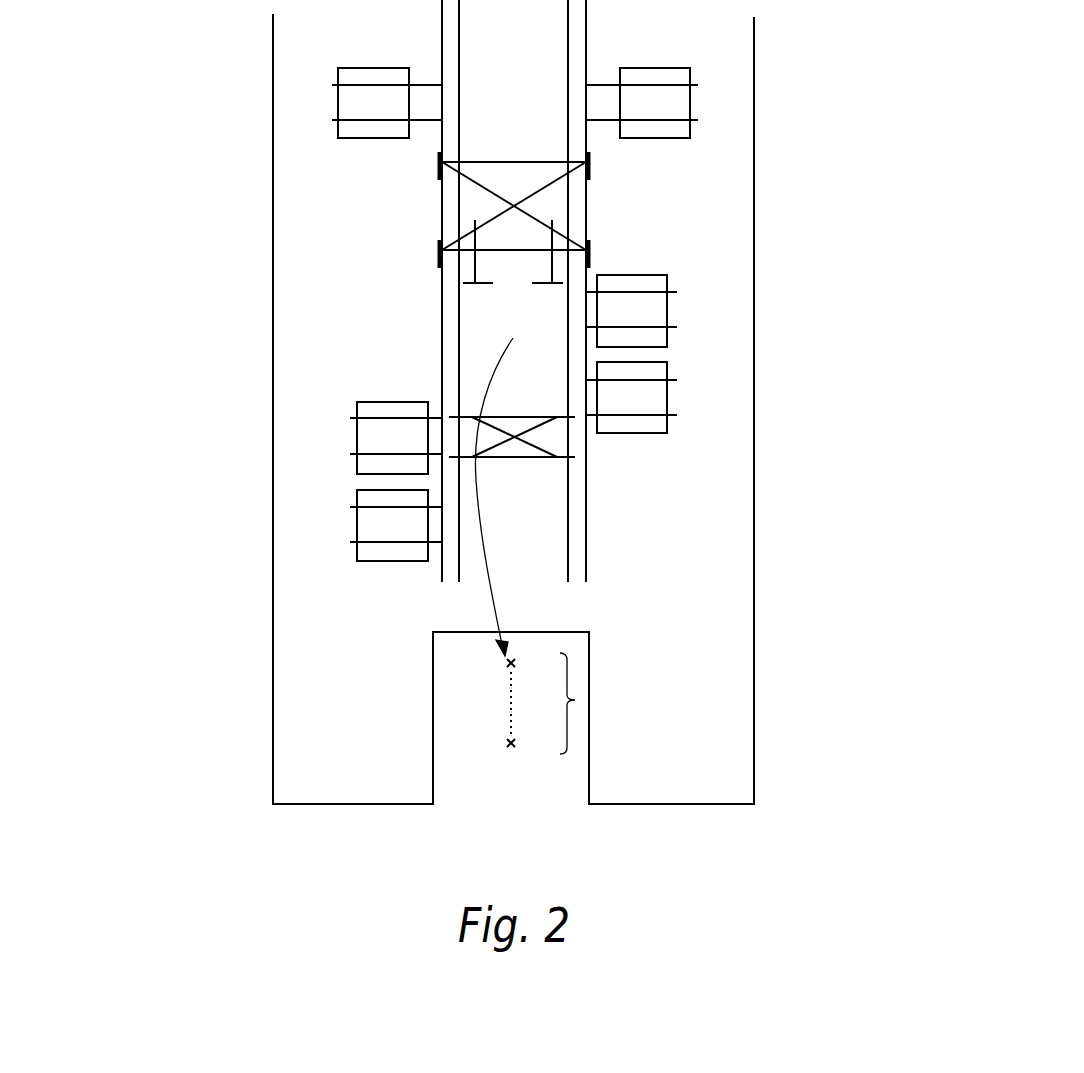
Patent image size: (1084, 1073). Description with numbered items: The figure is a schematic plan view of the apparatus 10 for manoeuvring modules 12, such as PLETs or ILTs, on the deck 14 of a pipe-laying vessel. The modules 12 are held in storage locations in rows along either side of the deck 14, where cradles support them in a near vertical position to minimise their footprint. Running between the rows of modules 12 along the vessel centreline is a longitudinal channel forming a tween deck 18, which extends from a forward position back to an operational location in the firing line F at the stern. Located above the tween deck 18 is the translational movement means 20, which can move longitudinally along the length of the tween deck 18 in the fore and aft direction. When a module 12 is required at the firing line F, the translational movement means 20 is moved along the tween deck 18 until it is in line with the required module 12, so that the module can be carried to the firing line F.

The apparatus 10 is at (773, 87).
The module 12 is at (355, 100).
The deck 14 is at (372, 649).
The tween deck 18 is at (536, 88).
The translational movement means 20 is at (553, 203).
The firing line F is at (575, 700).